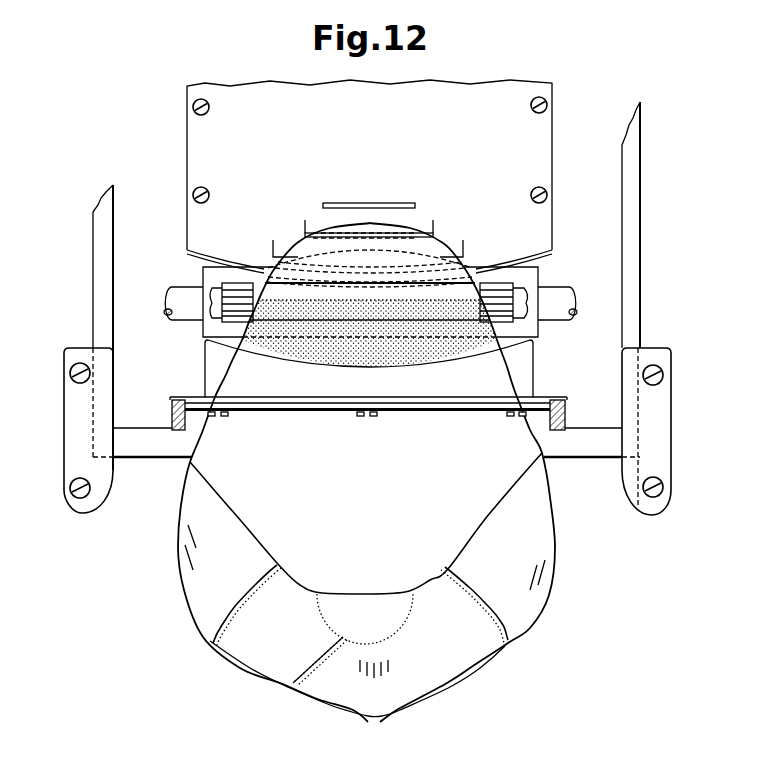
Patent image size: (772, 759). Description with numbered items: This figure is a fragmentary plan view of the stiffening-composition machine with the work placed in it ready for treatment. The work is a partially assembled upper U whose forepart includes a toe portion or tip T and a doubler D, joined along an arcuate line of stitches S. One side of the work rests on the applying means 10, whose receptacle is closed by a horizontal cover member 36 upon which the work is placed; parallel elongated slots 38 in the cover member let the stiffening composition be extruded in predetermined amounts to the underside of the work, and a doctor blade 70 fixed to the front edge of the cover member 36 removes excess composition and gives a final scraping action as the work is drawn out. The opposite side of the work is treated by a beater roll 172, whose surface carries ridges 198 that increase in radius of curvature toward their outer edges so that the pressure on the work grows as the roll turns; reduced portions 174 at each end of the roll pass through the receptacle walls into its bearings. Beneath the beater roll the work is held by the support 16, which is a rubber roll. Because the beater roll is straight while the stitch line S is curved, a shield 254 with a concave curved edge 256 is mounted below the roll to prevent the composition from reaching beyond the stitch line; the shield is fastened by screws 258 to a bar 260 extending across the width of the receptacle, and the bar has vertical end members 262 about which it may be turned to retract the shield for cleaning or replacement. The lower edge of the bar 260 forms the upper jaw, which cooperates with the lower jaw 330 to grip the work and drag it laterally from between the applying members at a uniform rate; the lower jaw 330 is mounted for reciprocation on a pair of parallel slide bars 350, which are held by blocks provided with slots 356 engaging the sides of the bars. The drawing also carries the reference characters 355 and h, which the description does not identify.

The applying means 10 is at (557, 117).
The support 16 is at (540, 271).
The horizontal cover member 36 is at (369, 165).
The elongated slots 38 is at (326, 234).
The doctor blade 70 is at (237, 264).
The beater roll 172 is at (214, 297).
The reduced portions 174 is at (212, 318).
The ridges 198 is at (510, 305).
The shield 254 is at (210, 360).
The curved edge 256 is at (391, 356).
The screws 258 is at (372, 414).
The bar 260 is at (315, 407).
The vertical end members 262 is at (567, 416).
The lower jaw 330 is at (599, 450).
The slide bars 350 is at (100, 257).
The mounting bracket 355 is at (66, 394).
The slot 356 is at (93, 431).
The doubler D is at (370, 225).
The toe portion or tip T is at (423, 258).
The line of stitches S is at (462, 353).
The seam h is at (234, 514).
The upper U is at (231, 643).